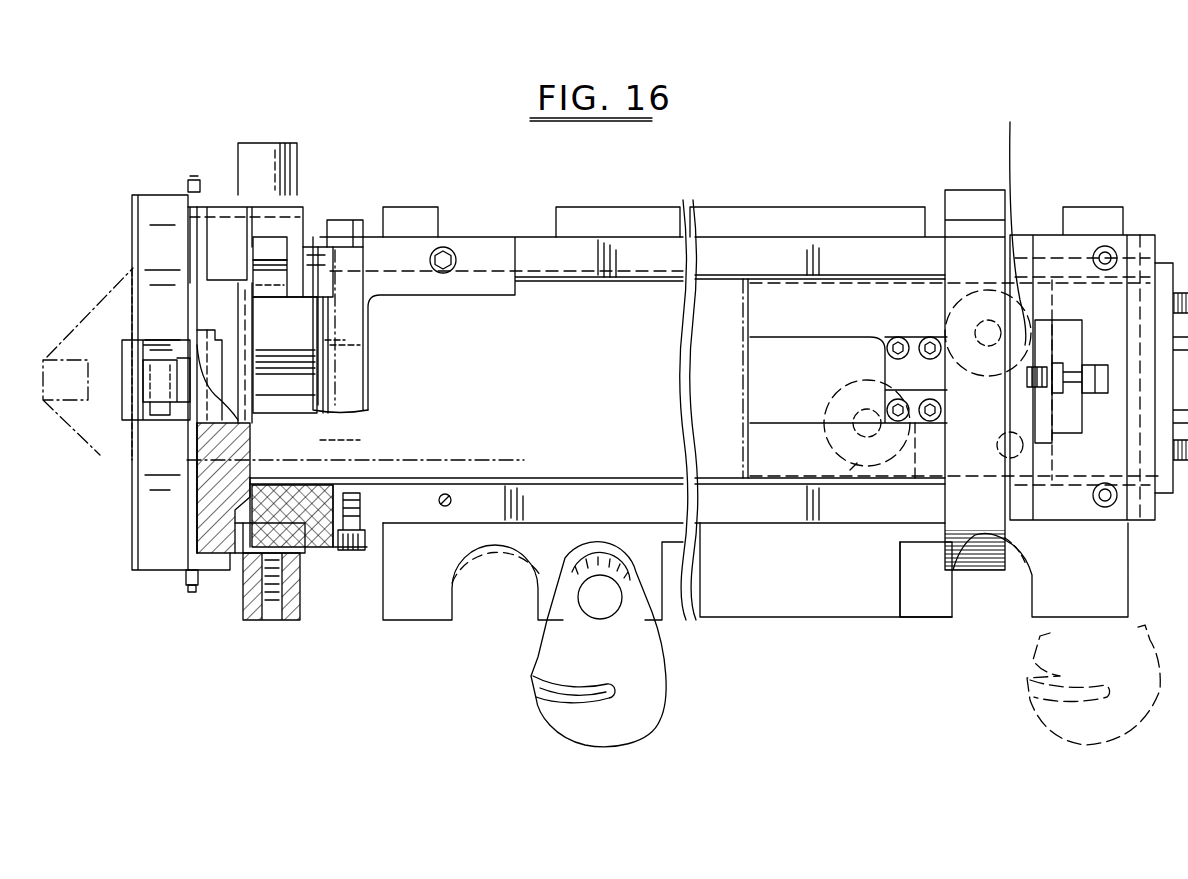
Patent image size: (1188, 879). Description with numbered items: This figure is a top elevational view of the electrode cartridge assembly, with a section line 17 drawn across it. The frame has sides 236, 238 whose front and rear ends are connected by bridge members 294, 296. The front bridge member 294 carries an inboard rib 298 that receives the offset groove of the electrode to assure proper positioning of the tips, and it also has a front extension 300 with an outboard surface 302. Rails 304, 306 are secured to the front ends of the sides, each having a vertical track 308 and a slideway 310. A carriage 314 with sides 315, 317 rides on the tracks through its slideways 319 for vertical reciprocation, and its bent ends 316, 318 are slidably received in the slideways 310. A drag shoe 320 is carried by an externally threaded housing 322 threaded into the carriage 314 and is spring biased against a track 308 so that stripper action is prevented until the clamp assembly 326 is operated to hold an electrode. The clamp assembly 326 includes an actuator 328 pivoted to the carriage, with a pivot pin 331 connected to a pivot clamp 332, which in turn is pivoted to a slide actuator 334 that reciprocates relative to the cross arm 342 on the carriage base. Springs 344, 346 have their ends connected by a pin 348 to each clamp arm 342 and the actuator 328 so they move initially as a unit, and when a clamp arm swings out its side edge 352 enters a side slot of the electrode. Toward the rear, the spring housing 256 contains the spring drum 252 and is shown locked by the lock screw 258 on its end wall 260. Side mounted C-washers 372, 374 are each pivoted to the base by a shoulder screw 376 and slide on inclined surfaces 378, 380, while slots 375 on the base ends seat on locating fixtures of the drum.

The section line 17- 17 is at (529, 420).
The side 236 is at (603, 495).
The side 238 is at (622, 243).
The spring drum 252 is at (855, 490).
The spring housing 256 is at (817, 283).
The lock screw 258 is at (1062, 395).
The end wall 260 is at (1007, 215).
The front bridge member 294 is at (481, 240).
The bridge member 296 is at (1046, 220).
The inboard rib 298 is at (340, 362).
The front extension 300 is at (313, 300).
The outboard surface 302 is at (254, 328).
The rail 304 is at (320, 547).
The rail 306 is at (332, 210).
The vertical track 308 is at (270, 243).
The slideway 310 is at (262, 512).
The carriage 314 is at (225, 545).
The side 315 is at (200, 515).
The bent end 316 is at (333, 215).
The side 317 is at (190, 229).
The bent end 318 is at (335, 487).
The slideway 319 is at (255, 480).
The drag shoe 320 is at (266, 562).
The externally threaded housing 322 is at (298, 153).
The clamp assembly 326 is at (221, 193).
The actuator 328 is at (78, 418).
The pivot pin 331 is at (192, 433).
The pivot clamp 332 is at (150, 408).
The slide actuator 334 is at (205, 443).
The cross arm 342 is at (187, 215).
The spring 344 is at (186, 185).
The spring 346 is at (188, 580).
The pin 348 is at (195, 590).
The side edge 352 is at (233, 227).
The C-washer 372 is at (545, 714).
The C-washer 374 is at (1032, 710).
The slot 375 is at (945, 207).
The shoulder screw 376 is at (578, 600).
The inclined surface 378 is at (428, 622).
The inclined surface 380 is at (936, 607).